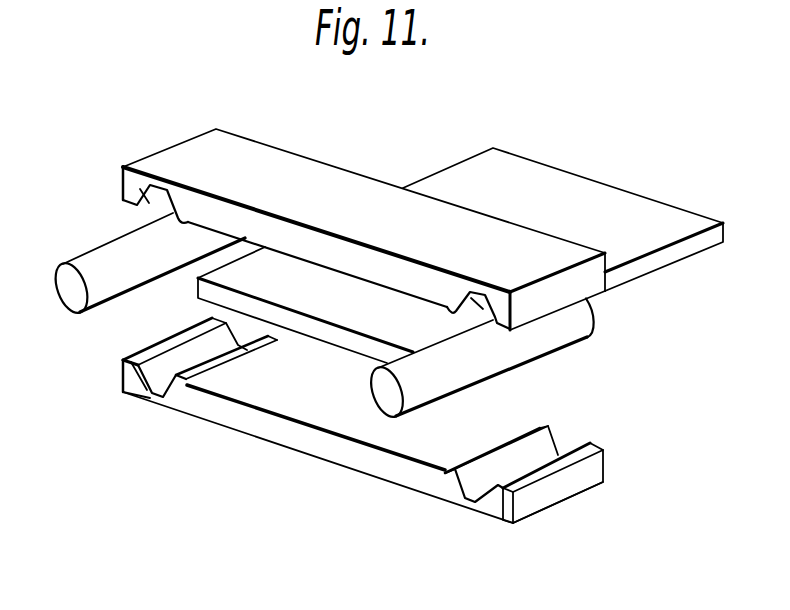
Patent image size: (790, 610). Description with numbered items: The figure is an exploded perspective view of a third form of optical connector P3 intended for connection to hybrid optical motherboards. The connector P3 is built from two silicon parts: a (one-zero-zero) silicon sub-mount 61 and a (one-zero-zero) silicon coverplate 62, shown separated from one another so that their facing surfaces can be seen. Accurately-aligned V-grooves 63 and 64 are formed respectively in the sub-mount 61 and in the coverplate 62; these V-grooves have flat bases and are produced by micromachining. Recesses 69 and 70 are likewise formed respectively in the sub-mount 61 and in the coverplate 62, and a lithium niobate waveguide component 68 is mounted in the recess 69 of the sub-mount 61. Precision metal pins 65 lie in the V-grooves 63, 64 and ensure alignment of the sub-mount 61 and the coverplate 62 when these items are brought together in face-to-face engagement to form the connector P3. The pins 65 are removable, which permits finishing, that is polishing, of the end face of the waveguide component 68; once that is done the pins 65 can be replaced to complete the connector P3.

The optical connector P3 is at (287, 138).
The silicon sub-mount 61 is at (357, 468).
The silicon coverplate 62 is at (365, 192).
The V-grooves 63 is at (150, 373).
The V-grooves 64 is at (136, 194).
The precision metal pins 65 is at (100, 262).
The lithium niobate waveguide component 68 is at (650, 265).
The recess 69 is at (282, 404).
The recess 70 is at (197, 227).